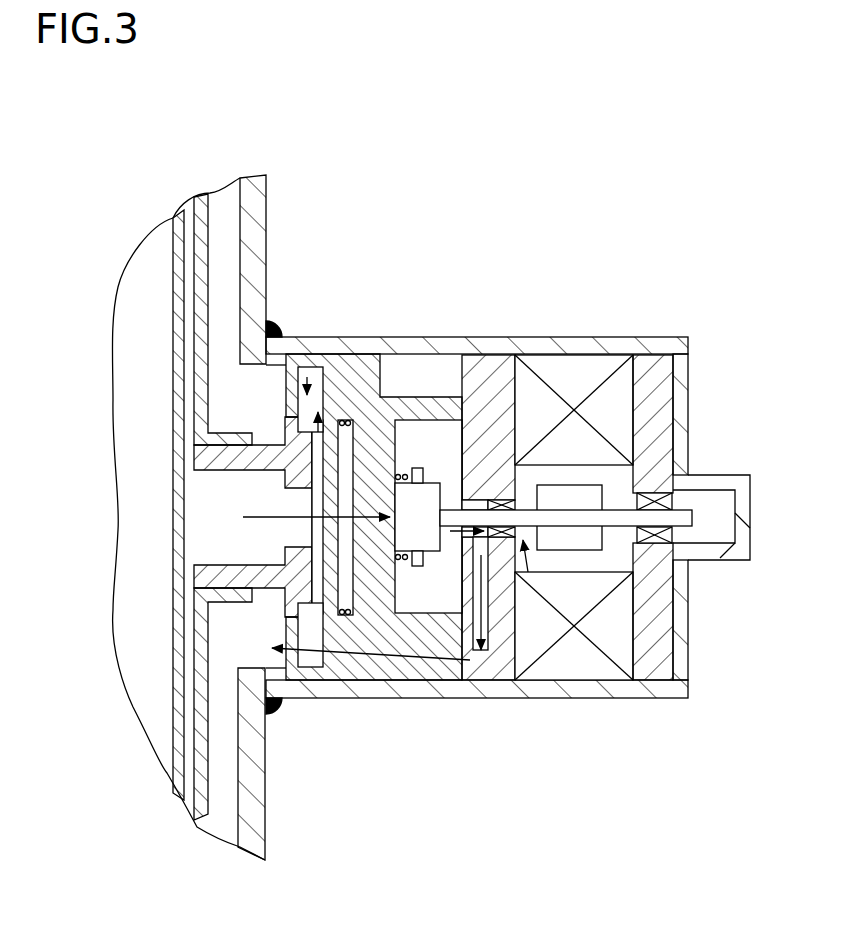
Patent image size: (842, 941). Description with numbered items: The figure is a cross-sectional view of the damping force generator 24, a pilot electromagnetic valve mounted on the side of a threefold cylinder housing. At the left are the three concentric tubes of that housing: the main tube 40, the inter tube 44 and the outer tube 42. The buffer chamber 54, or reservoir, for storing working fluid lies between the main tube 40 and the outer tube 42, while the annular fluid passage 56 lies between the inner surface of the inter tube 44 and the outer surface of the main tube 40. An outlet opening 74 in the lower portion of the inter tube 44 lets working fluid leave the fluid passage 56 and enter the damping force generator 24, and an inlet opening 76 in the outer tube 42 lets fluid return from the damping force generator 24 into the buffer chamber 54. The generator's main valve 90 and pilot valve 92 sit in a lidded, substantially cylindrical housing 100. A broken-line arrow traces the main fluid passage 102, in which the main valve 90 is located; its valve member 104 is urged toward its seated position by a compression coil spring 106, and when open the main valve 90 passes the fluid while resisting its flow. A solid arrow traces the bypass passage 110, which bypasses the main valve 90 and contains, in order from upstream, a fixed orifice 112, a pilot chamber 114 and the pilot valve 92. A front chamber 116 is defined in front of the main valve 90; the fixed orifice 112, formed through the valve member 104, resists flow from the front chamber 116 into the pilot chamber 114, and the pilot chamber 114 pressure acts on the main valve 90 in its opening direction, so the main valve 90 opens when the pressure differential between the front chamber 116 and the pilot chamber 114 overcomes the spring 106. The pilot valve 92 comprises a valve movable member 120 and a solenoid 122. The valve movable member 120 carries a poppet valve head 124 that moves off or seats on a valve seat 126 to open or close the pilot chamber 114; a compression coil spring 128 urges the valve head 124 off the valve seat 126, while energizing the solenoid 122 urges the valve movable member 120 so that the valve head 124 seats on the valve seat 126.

The damping force generator 24 is at (394, 433).
The main tube 40 is at (178, 245).
The outer tube 42 is at (252, 218).
The inter tube 44 is at (198, 205).
The buffer chamber 54 is at (227, 270).
The annular fluid passage 56 is at (190, 277).
The outlet opening 74 is at (197, 460).
The inlet opening 76 is at (250, 376).
The main valve 90 is at (305, 368).
The pilot valve 92 is at (557, 323).
The housing 100 is at (653, 692).
The main fluid passage 102 is at (320, 495).
The valve member 104 is at (343, 420).
The compression coil spring 106 is at (358, 420).
The bypass passage 110 is at (262, 518).
The fixed orifice 112 is at (312, 517).
The pilot chamber 114 is at (345, 583).
The front chamber 116 is at (315, 585).
The valve movable member 120 is at (520, 572).
The solenoid 122 is at (590, 660).
The poppet valve head 124 is at (430, 540).
The valve seat 126 is at (425, 485).
The compression coil spring 128 is at (405, 477).